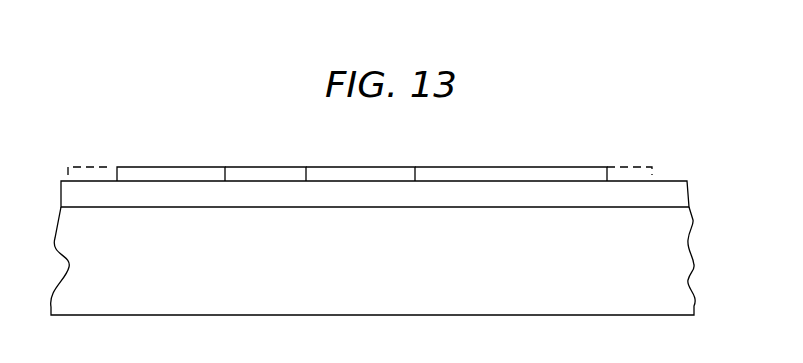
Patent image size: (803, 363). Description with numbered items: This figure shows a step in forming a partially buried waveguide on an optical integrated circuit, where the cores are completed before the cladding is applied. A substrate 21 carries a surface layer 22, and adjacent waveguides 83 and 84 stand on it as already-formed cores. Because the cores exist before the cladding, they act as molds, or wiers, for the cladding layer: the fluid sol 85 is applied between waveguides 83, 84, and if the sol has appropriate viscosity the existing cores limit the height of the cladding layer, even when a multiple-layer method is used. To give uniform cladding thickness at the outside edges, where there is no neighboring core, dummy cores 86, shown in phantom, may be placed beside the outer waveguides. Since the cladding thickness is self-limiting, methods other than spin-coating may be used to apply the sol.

The substrate 21 is at (691, 233).
The surface layer 22 is at (691, 201).
The waveguide 83 is at (236, 168).
The waveguide 84 is at (478, 168).
The fluid sol 85 is at (335, 168).
The dummy cores 86 is at (106, 167).